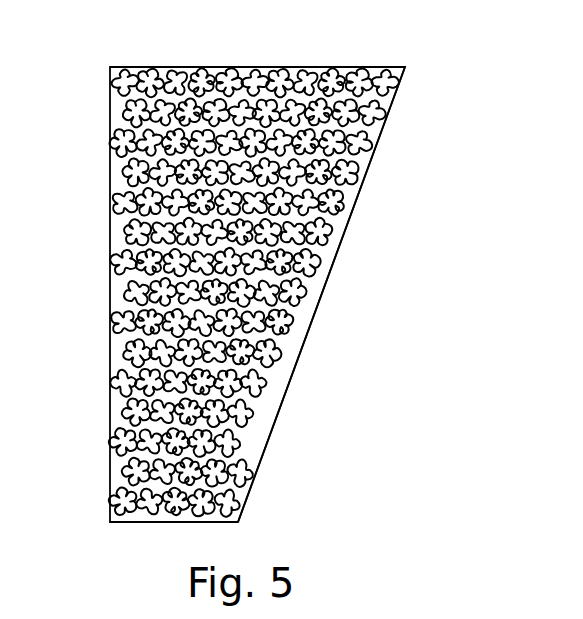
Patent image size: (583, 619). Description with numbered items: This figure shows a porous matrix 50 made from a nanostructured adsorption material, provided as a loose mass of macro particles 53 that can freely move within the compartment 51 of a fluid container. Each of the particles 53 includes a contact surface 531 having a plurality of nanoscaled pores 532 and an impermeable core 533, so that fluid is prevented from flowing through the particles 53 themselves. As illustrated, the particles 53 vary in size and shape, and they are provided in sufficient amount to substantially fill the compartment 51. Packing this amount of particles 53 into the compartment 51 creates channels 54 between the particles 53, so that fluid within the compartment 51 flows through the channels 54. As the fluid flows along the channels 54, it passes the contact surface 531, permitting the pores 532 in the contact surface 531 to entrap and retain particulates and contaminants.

The porous matrix 50 is at (393, 99).
The compartment 51 is at (355, 213).
The macro particles 53 is at (328, 290).
The contact surface 531 is at (307, 328).
The nanoscaled pores 532 is at (167, 73).
The impermeable core 533 is at (110, 340).
The channels 54 is at (232, 80).